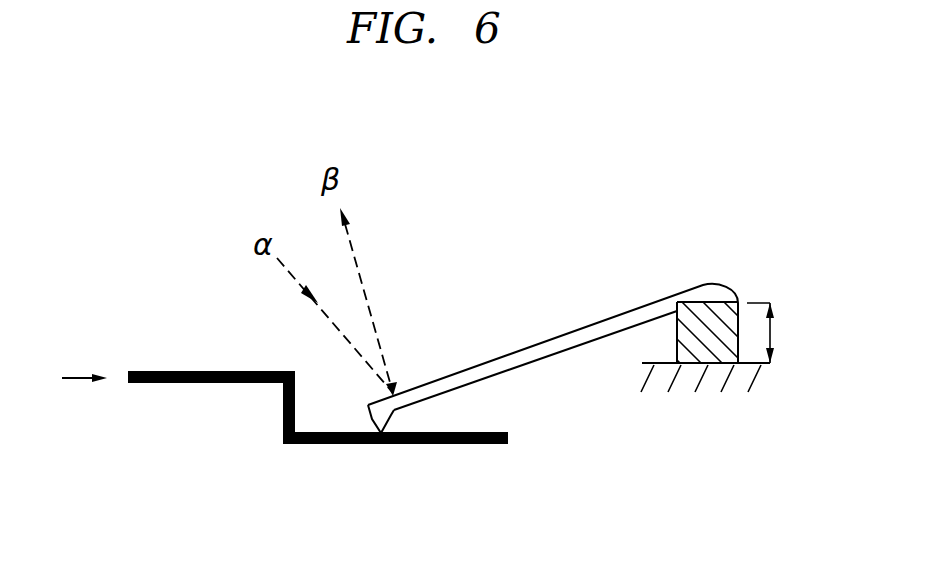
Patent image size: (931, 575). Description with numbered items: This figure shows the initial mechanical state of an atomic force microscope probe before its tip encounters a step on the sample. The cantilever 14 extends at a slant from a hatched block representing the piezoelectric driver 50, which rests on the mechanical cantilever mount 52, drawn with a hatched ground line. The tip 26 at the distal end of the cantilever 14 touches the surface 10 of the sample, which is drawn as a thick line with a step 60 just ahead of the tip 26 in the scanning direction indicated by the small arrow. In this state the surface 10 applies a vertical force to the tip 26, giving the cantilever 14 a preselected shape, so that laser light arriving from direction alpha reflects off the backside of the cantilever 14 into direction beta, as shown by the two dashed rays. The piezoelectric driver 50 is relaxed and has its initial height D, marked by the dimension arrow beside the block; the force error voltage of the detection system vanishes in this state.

The surface 10 is at (157, 370).
The cantilever 14 is at (563, 332).
The tip 26 is at (363, 445).
The piezoelectric driver 50 is at (677, 345).
The mechanical cantilever mount 52 is at (690, 387).
The step 60 is at (282, 412).
The height D is at (771, 333).